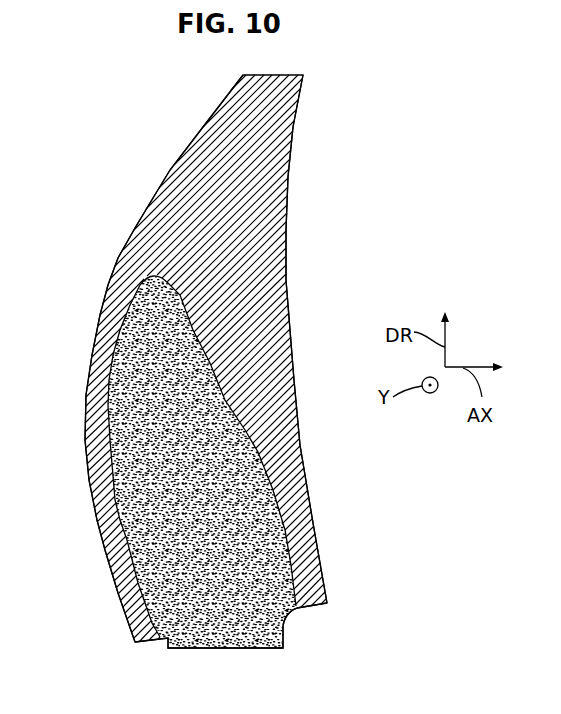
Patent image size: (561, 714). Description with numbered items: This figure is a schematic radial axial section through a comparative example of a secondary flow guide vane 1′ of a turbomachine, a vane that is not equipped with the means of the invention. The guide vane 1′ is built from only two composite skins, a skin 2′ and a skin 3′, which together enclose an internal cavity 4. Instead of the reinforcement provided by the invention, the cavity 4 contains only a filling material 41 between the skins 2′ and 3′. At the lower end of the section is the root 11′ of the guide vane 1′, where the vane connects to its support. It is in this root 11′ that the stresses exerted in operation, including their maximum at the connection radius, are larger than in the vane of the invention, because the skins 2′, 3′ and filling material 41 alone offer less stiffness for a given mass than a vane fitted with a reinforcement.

The guide vane 1′ is at (41, 341).
The skin 2′ is at (302, 311).
The skin 3′ is at (158, 204).
The cavity 4 is at (163, 435).
The filling material 41 is at (181, 484).
The root 11′ is at (227, 649).